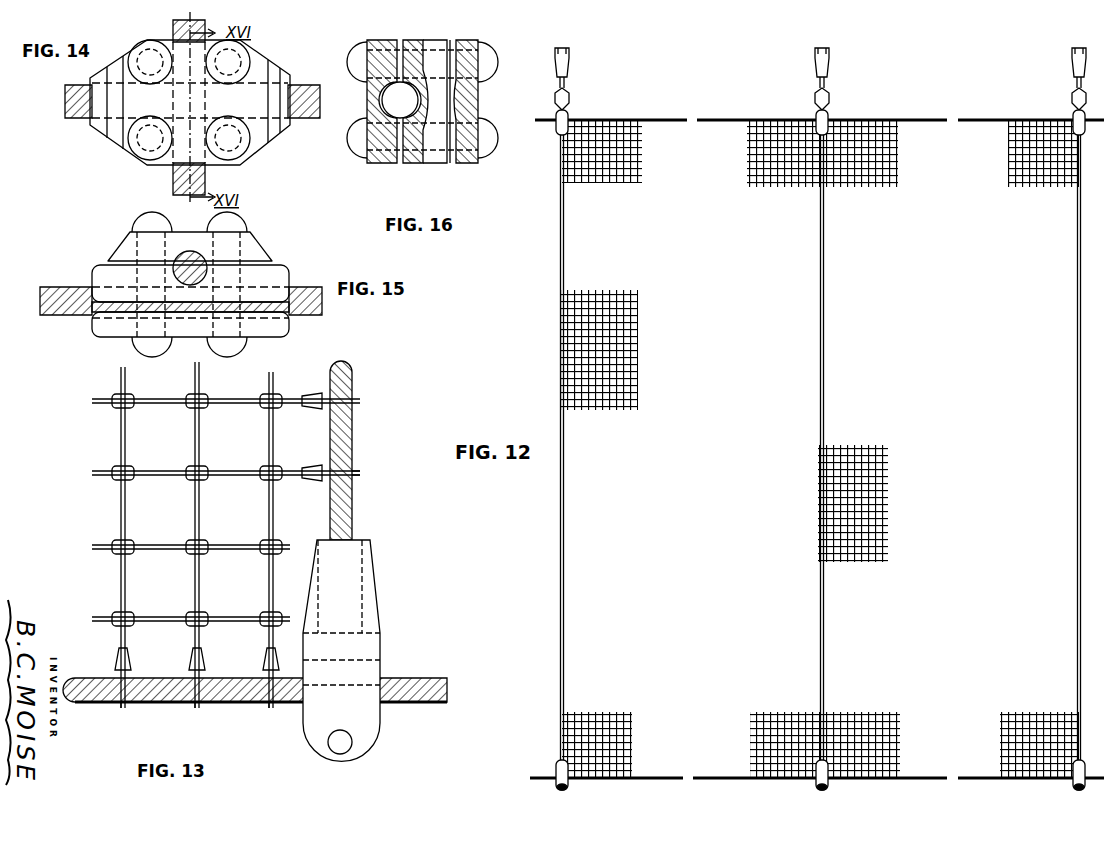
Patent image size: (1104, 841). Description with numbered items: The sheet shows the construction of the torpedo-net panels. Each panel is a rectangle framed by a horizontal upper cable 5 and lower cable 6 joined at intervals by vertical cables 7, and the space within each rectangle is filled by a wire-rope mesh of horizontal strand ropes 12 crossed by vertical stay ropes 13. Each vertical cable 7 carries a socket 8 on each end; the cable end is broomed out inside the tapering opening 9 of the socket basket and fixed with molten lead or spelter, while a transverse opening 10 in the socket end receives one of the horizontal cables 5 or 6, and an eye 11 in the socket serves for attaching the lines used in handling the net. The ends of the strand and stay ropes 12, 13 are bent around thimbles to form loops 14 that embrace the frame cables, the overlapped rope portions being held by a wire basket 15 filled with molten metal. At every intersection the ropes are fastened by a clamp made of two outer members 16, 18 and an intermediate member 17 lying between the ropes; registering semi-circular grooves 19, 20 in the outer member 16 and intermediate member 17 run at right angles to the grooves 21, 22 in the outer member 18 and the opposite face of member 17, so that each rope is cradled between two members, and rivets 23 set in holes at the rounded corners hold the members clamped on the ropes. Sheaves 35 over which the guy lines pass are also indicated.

In FIG. 12, the upper rope or cable 5 is at (937, 118).
In FIG. 13, the lower rope or cable 6 is at (160, 703).
In FIG. 12, the lower rope or cable 6 is at (935, 777).
In FIG. 13, the vertical cable 7 is at (353, 442).
In FIG. 12, the vertical cable 7 is at (565, 483).
In FIG. 13, the socket 8 is at (370, 640).
In FIG. 12, the socket 8 is at (570, 115).
In FIG. 13, the tapering opening 9 is at (368, 594).
In FIG. 13, the transverse opening 10 is at (365, 662).
In FIG. 13, the opening or eye 11 is at (346, 744).
In FIG. 14, the horizontal or strand rope 12 is at (86, 117).
In FIG. 15, the horizontal or strand rope 12 is at (64, 312).
In FIG. 13, the horizontal or strand rope 12 is at (242, 408).
In FIG. 12, the horizontal or strand rope 12 is at (600, 295).
In FIG. 14, the vertical or stay rope 13 is at (175, 181).
In FIG. 15, the vertical or stay rope 13 is at (205, 262).
In FIG. 13, the vertical or stay rope 13 is at (127, 444).
In FIG. 12, the vertical or stay rope 13 is at (640, 344).
In FIG. 13, the loop 14 is at (352, 471).
In FIG. 13, the basket 15 is at (311, 410).
In FIG. 14, the outer clamp member 16 is at (240, 98).
In FIG. 16, the outer clamp member 16 is at (470, 163).
In FIG. 15, the outer clamp member 16 is at (118, 250).
In FIG. 14, the intermediate clamp member 17 is at (282, 130).
In FIG. 16, the intermediate clamp member 17 is at (411, 163).
In FIG. 15, the intermediate clamp member 17 is at (94, 275).
In FIG. 16, the outer clamp member 18 is at (386, 163).
In FIG. 15, the outer clamp member 18 is at (108, 337).
In FIG. 16, the groove 19 is at (460, 45).
In FIG. 16, the groove 20 is at (437, 45).
In FIG. 16, the groove 21 is at (392, 100).
In FIG. 16, the groove 22 is at (418, 48).
In FIG. 14, the rivet 23 is at (145, 44).
In FIG. 16, the rivet 23 is at (492, 57).
In FIG. 15, the rivet 23 is at (152, 352).
In FIG. 12, the sheave 35 is at (570, 84).